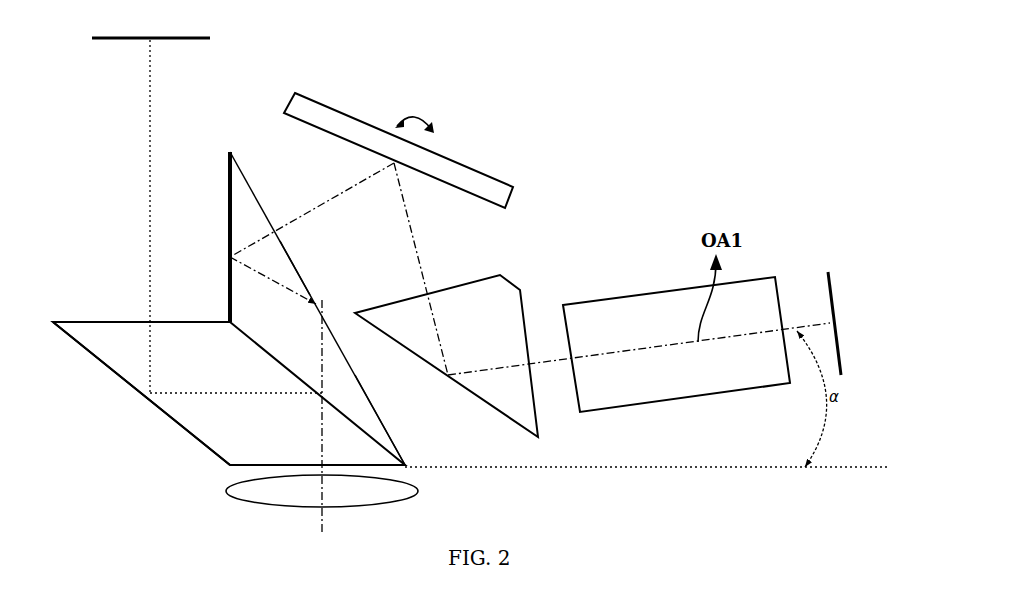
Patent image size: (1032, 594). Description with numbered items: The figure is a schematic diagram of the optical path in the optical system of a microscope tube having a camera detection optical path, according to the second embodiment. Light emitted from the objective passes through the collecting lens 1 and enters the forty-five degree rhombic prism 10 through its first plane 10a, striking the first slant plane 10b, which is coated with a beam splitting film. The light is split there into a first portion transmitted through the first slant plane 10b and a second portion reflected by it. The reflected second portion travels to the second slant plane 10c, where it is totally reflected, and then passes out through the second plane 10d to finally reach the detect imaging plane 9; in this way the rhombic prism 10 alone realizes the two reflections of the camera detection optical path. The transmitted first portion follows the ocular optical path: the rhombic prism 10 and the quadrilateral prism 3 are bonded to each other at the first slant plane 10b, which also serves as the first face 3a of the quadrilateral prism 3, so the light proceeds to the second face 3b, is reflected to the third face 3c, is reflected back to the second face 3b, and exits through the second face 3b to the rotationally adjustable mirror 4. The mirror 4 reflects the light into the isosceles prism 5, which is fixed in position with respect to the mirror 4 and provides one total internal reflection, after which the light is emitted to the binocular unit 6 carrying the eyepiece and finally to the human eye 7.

The collecting lens 1 is at (230, 491).
The quadrilateral prism 3 is at (242, 209).
The first face of the quadrilateral prism 3a is at (366, 432).
The second face of the quadrilateral prism 3b is at (300, 268).
The third face of the quadrilateral prism 3c is at (230, 275).
The rotationally adjustable mirror 4 is at (290, 105).
The isosceles prism 5 is at (510, 419).
The binocular unit 6 is at (727, 393).
The human eye 7 is at (843, 367).
The detect imaging plane 9 is at (110, 39).
The 45 degree rhombic prism 10 is at (100, 358).
The first plane of the 45 degree rhombic prism 10a is at (232, 469).
The first slant plane of the 45 degree rhombic prism 10b is at (232, 324).
The second slant plane of the 45 degree rhombic prism 10c is at (166, 414).
The second plane of the 45 degree rhombic prism 10d is at (90, 321).